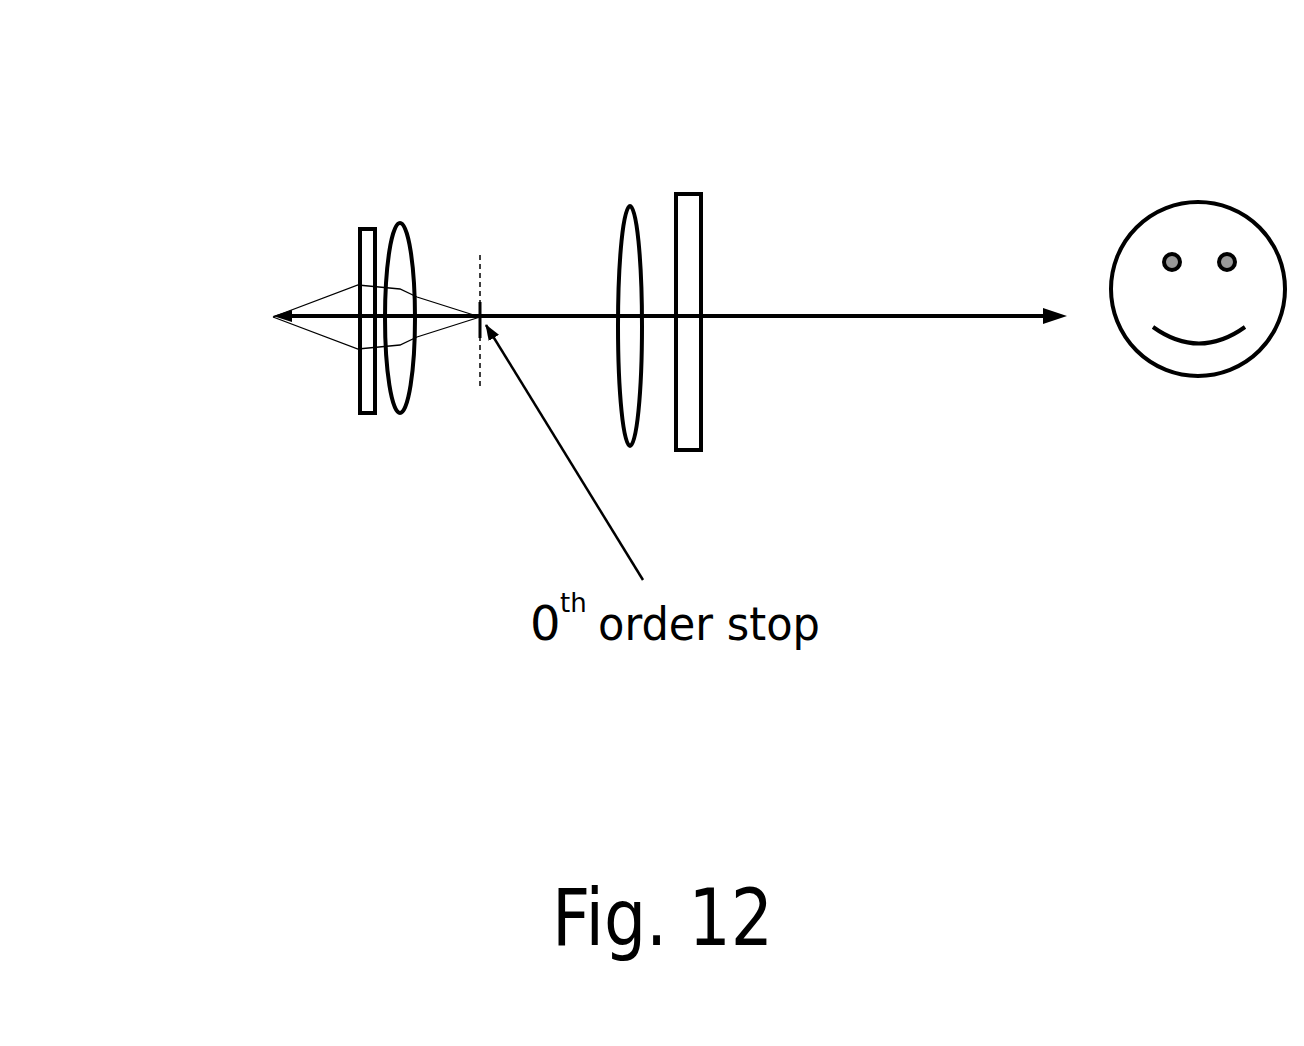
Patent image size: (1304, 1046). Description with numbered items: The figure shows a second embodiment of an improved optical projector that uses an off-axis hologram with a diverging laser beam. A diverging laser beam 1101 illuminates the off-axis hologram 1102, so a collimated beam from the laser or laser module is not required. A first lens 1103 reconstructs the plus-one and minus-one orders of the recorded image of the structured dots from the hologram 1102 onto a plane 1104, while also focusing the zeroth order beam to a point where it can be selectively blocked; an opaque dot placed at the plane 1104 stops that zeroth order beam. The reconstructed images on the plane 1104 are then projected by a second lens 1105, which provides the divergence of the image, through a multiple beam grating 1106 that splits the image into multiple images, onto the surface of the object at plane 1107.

The diverging laser beam 1101 is at (332, 333).
The off-axis hologram 1102 is at (358, 220).
The first lens 1103 is at (397, 437).
The plane 1104 is at (507, 283).
The second lens 1105 is at (627, 193).
The multiple beam grating 1106 is at (715, 198).
The plane of the object surface 1107 is at (1243, 373).